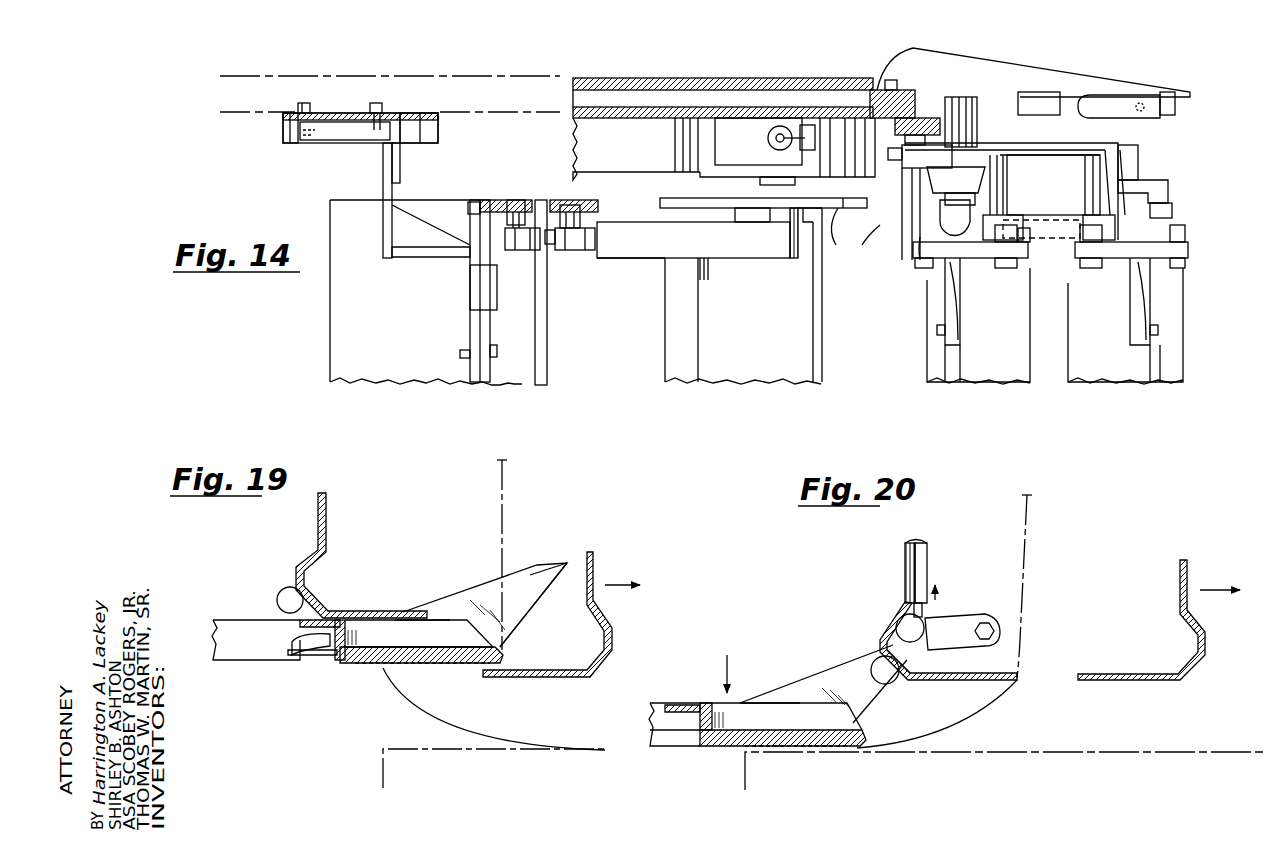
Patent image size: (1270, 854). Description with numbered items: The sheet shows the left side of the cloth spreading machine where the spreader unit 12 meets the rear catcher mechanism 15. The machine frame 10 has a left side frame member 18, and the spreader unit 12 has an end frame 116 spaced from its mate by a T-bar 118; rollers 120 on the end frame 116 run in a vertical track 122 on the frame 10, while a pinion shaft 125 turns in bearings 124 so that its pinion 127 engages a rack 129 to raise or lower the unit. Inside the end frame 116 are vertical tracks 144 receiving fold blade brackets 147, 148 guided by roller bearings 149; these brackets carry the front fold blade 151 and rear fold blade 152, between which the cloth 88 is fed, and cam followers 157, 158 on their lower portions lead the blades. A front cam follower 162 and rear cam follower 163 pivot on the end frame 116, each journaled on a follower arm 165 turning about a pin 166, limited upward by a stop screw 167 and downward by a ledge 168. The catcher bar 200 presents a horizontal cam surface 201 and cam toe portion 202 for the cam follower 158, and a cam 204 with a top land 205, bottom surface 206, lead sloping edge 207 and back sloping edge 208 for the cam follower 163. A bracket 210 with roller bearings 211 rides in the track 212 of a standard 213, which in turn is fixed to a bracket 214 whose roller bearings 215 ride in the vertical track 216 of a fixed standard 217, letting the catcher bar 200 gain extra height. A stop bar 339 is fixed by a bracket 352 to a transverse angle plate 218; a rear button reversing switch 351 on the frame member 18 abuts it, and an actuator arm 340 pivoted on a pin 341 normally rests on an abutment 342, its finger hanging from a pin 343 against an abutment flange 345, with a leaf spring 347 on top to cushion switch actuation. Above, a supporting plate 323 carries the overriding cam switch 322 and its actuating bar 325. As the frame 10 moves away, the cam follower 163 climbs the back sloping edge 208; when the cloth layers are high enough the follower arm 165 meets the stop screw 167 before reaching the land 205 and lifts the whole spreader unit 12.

In FIG. 14, the frame 10 is at (509, 94).
In FIG. 14, the spreader unit 12 is at (1192, 366).
In FIG. 14, the catcher mechanism 15 is at (500, 382).
In FIG. 19, the catcher mechanism 15 is at (222, 616).
In FIG. 20, the catcher mechanism 15 is at (660, 703).
In FIG. 14, the left side frame member 18 is at (765, 78).
In FIG. 19, the cloth 88 is at (510, 490).
In FIG. 20, the cloth 88 is at (1030, 535).
In FIG. 14, the end frame 116 is at (1022, 148).
In FIG. 14, the T-bar 118 is at (912, 235).
In FIG. 14, the rollers 120 is at (905, 150).
In FIG. 14, the vertical track 122 is at (898, 100).
In FIG. 14, the bearings 124 is at (967, 184).
In FIG. 14, the pinion shaft 125 is at (955, 222).
In FIG. 14, the pinion 127 is at (962, 97).
In FIG. 14, the rack 129 is at (945, 128).
In FIG. 14, the vertical tracks 144 is at (1049, 227).
In FIG. 14, the fold blade bracket 147 is at (1115, 262).
In FIG. 14, the fold blade bracket 148 is at (961, 264).
In FIG. 14, the roller bearings 149 is at (1070, 255).
In FIG. 14, the front fold blade 151 is at (1120, 369).
In FIG. 19, the front fold blade 151 is at (533, 672).
In FIG. 20, the front fold blade 151 is at (1148, 650).
In FIG. 14, the rear fold blade 152 is at (1010, 369).
In FIG. 19, the rear fold blade 152 is at (330, 512).
In FIG. 20, the rear fold blade 152 is at (972, 682).
In FIG. 14, the cam follower 157 is at (1185, 232).
In FIG. 14, the cam follower 158 is at (918, 250).
In FIG. 19, the cam follower 158 is at (298, 590).
In FIG. 20, the cam follower 158 is at (878, 655).
In FIG. 14, the front cam follower 162 is at (1172, 205).
In FIG. 14, the rear cam follower 163 is at (955, 200).
In FIG. 19, the rear cam follower 163 is at (295, 648).
In FIG. 20, the rear cam follower 163 is at (896, 620).
In FIG. 14, the follower arm 165 is at (1135, 182).
In FIG. 20, the follower arm 165 is at (970, 641).
In FIG. 20, the pin 166 is at (988, 628).
In FIG. 20, the stop screw 167 is at (925, 607).
In FIG. 14, the ledge 168 is at (1140, 162).
In FIG. 14, the catcher bar 200 is at (775, 302).
In FIG. 19, the catcher bar 200 is at (372, 665).
In FIG. 20, the catcher bar 200 is at (725, 742).
In FIG. 14, the cam surface 201 is at (715, 244).
In FIG. 19, the cam surface 201 is at (258, 617).
In FIG. 20, the cam surface 201 is at (705, 703).
In FIG. 14, the cam toe portion 202 is at (800, 256).
In FIG. 19, the cam toe portion 202 is at (493, 588).
In FIG. 20, the cam toe portion 202 is at (830, 710).
In FIG. 14, the cam 204 is at (859, 238).
In FIG. 19, the cam 204 is at (518, 572).
In FIG. 20, the cam 204 is at (850, 692).
In FIG. 14, the top land 205 is at (842, 212).
In FIG. 19, the top land 205 is at (556, 563).
In FIG. 20, the top land 205 is at (912, 660).
In FIG. 19, the bottom surface 206 is at (320, 656).
In FIG. 19, the lead sloping edge 207 is at (545, 598).
In FIG. 20, the lead sloping edge 207 is at (862, 698).
In FIG. 14, the back sloping edge 208 is at (722, 200).
In FIG. 19, the back sloping edge 208 is at (456, 596).
In FIG. 20, the back sloping edge 208 is at (826, 668).
In FIG. 14, the bracket 210 is at (640, 258).
In FIG. 19, the bracket 210 is at (240, 660).
In FIG. 20, the bracket 210 is at (668, 742).
In FIG. 14, the roller bearings 211 is at (590, 212).
In FIG. 14, the track 212 is at (590, 203).
In FIG. 14, the standard 213 is at (570, 200).
In FIG. 14, the bracket 214 is at (548, 340).
In FIG. 14, the roller bearings 215 is at (505, 220).
In FIG. 14, the vertical track 216 is at (525, 200).
In FIG. 14, the standard 217 is at (505, 190).
In FIG. 14, the transverse angle plate 218 is at (482, 327).
In FIG. 14, the overriding cam switch 322 is at (1128, 116).
In FIG. 14, the supporting plate 323 is at (962, 60).
In FIG. 14, the actuating bar 325 is at (1040, 105).
In FIG. 14, the stop bar 339 is at (400, 163).
In FIG. 14, the actuator arm 340 is at (410, 118).
In FIG. 14, the pin 341 is at (380, 96).
In FIG. 14, the abutment 342 is at (438, 132).
In FIG. 14, the pin 343 is at (300, 103).
In FIG. 14, the abutment flange 345 is at (290, 134).
In FIG. 14, the leaf spring 347 is at (324, 139).
In FIG. 14, the rear button reversing switch 351 is at (755, 146).
In FIG. 14, the bracket 352 is at (470, 288).